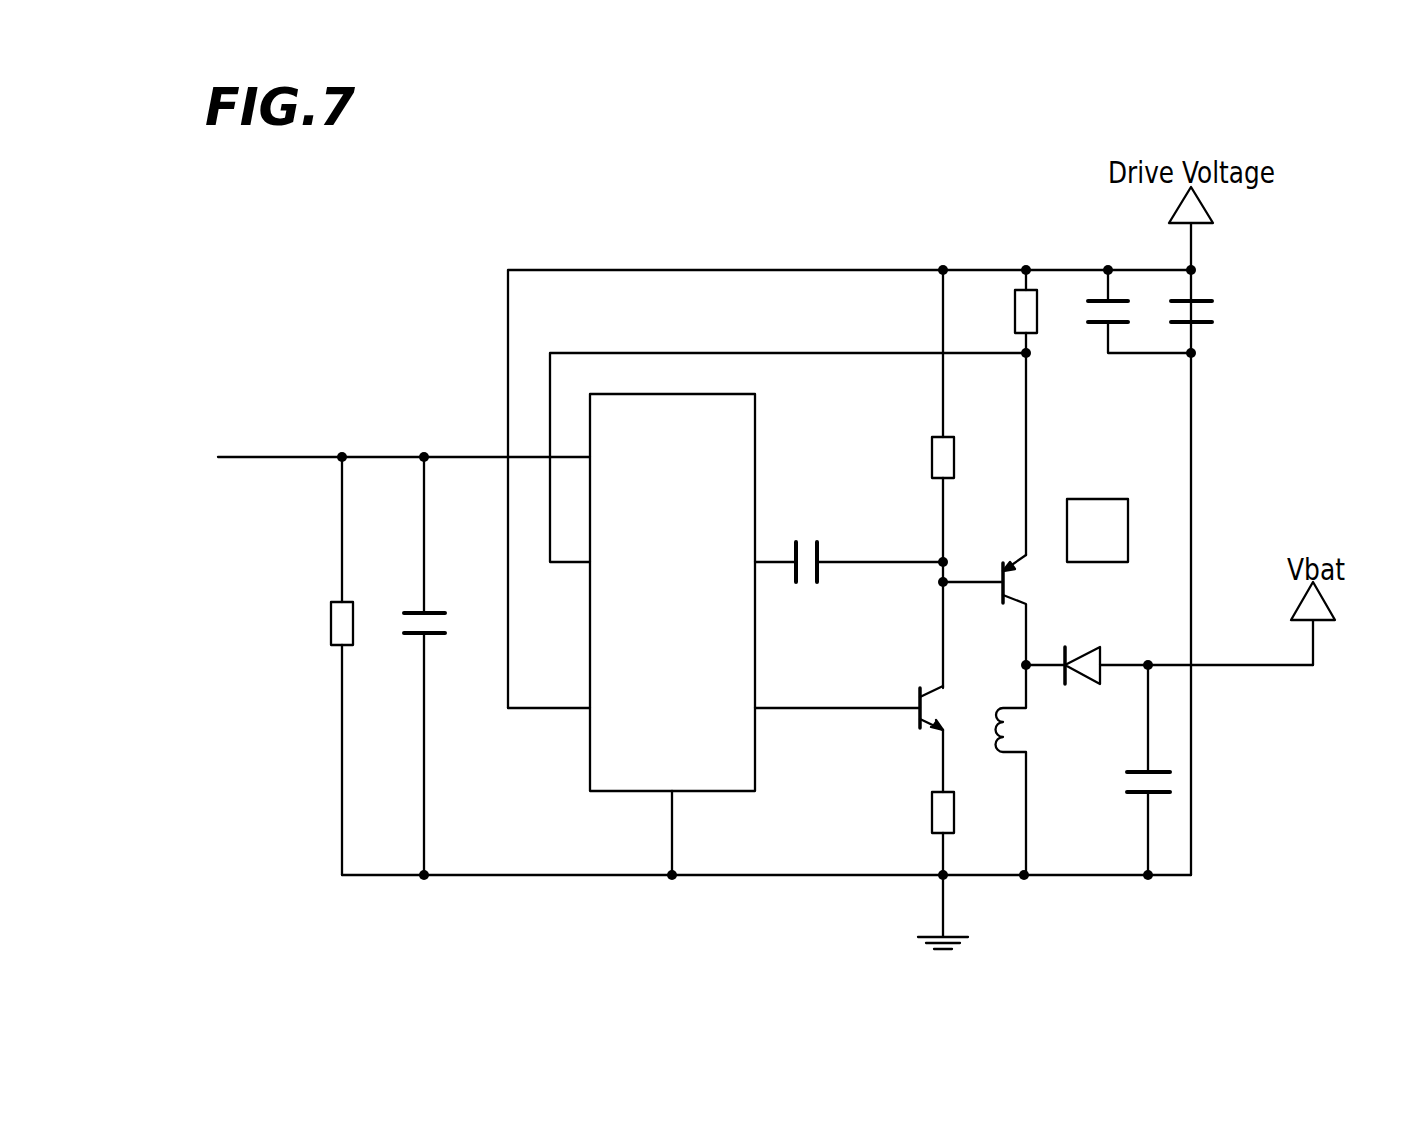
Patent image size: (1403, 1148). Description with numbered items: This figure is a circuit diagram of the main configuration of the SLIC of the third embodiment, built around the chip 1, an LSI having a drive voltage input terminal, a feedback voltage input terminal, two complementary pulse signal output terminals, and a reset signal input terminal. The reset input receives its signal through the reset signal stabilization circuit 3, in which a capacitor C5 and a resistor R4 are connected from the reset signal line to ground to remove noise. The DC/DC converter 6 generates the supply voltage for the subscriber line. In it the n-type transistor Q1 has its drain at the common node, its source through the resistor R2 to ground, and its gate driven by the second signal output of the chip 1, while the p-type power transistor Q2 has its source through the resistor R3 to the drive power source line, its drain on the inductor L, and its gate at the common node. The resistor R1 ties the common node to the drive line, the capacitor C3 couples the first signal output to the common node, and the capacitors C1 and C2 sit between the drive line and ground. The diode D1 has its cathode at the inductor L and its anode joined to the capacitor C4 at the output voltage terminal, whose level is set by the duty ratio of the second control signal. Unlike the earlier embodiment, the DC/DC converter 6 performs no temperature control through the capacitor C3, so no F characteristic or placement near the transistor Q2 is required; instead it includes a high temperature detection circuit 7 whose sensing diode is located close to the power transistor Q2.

The chip 1 is at (590, 624).
The reset signal stabilization circuit 3 is at (381, 357).
The DC/DC converter 6 is at (1063, 178).
The high temperature detection circuit 7 is at (1100, 499).
The resistor R1 is at (932, 458).
The resistor R2 is at (932, 812).
The resistor R3 is at (1036, 312).
The resistor R4 is at (331, 621).
The capacitor C1 is at (1214, 300).
The capacitor C2 is at (1098, 323).
The capacitor C3 is at (821, 552).
The capacitor C4 is at (1140, 771).
The capacitor C5 is at (428, 613).
The n-type transistor Q1 is at (930, 699).
The p-type power transistor Q2 is at (1006, 565).
The diode D1 is at (1090, 652).
The inductor L is at (1010, 732).